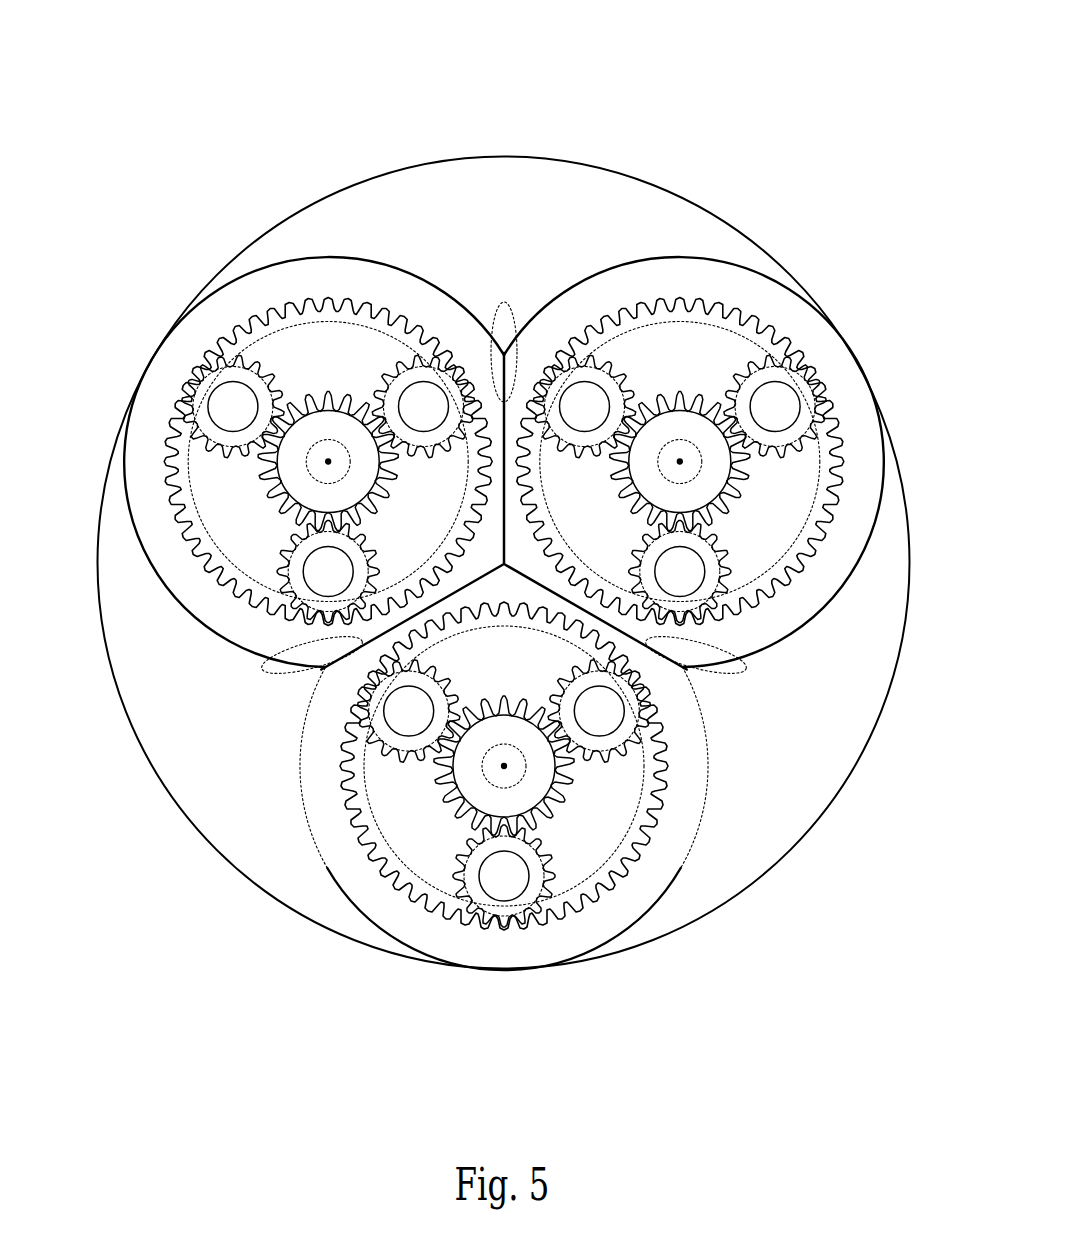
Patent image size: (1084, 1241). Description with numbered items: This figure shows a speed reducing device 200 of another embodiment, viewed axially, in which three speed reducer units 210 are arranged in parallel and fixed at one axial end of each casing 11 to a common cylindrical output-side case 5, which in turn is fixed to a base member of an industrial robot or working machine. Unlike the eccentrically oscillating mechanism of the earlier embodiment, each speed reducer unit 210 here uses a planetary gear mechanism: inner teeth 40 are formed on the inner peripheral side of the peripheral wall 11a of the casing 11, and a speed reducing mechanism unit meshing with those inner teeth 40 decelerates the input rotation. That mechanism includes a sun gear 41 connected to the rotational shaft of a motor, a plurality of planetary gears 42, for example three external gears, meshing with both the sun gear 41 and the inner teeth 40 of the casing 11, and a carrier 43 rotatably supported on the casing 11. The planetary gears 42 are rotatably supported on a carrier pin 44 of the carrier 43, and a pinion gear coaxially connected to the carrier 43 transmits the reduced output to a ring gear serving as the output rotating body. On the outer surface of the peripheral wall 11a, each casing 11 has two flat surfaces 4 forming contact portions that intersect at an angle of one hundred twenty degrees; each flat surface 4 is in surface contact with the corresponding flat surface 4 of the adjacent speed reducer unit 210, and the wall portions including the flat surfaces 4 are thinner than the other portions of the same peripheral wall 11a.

The speed reducing device 200 is at (660, 97).
The speed reducer unit 210 is at (283, 264).
The casing 11 is at (362, 262).
The peripheral wall 11a is at (235, 318).
The inner teeth 40 is at (402, 300).
The sun gear 41 is at (278, 498).
The planetary gear 42 is at (182, 392).
The carrier 43 is at (712, 343).
The carrier pin 44 is at (427, 400).
The flat surface 4 is at (516, 375).
The output-side case 5 is at (243, 874).